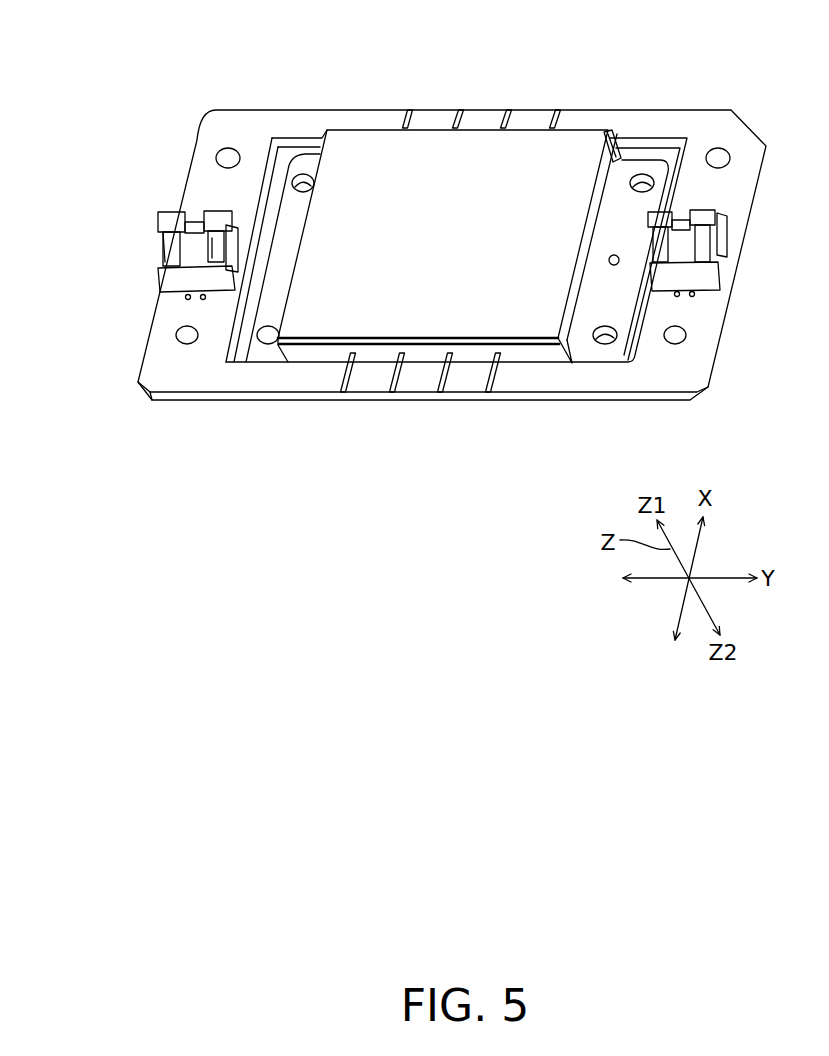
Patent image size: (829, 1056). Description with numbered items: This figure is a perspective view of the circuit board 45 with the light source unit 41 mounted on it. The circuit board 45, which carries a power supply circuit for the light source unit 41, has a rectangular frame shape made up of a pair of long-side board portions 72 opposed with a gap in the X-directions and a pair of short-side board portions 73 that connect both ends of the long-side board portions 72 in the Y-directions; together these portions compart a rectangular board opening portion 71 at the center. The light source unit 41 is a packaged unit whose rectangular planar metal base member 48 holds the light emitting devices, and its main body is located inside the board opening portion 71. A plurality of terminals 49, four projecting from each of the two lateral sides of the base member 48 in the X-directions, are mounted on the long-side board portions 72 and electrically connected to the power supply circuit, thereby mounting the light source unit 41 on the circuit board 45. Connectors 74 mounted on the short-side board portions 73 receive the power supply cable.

The light source unit 41 is at (611, 128).
The circuit board 45 is at (256, 110).
The base member 48 is at (627, 172).
The terminals 49 is at (411, 108).
The board opening portion 71 is at (222, 341).
The long-side board portions 72 is at (292, 127).
The short-side board portions 73 is at (168, 315).
The connectors 74 is at (158, 223).